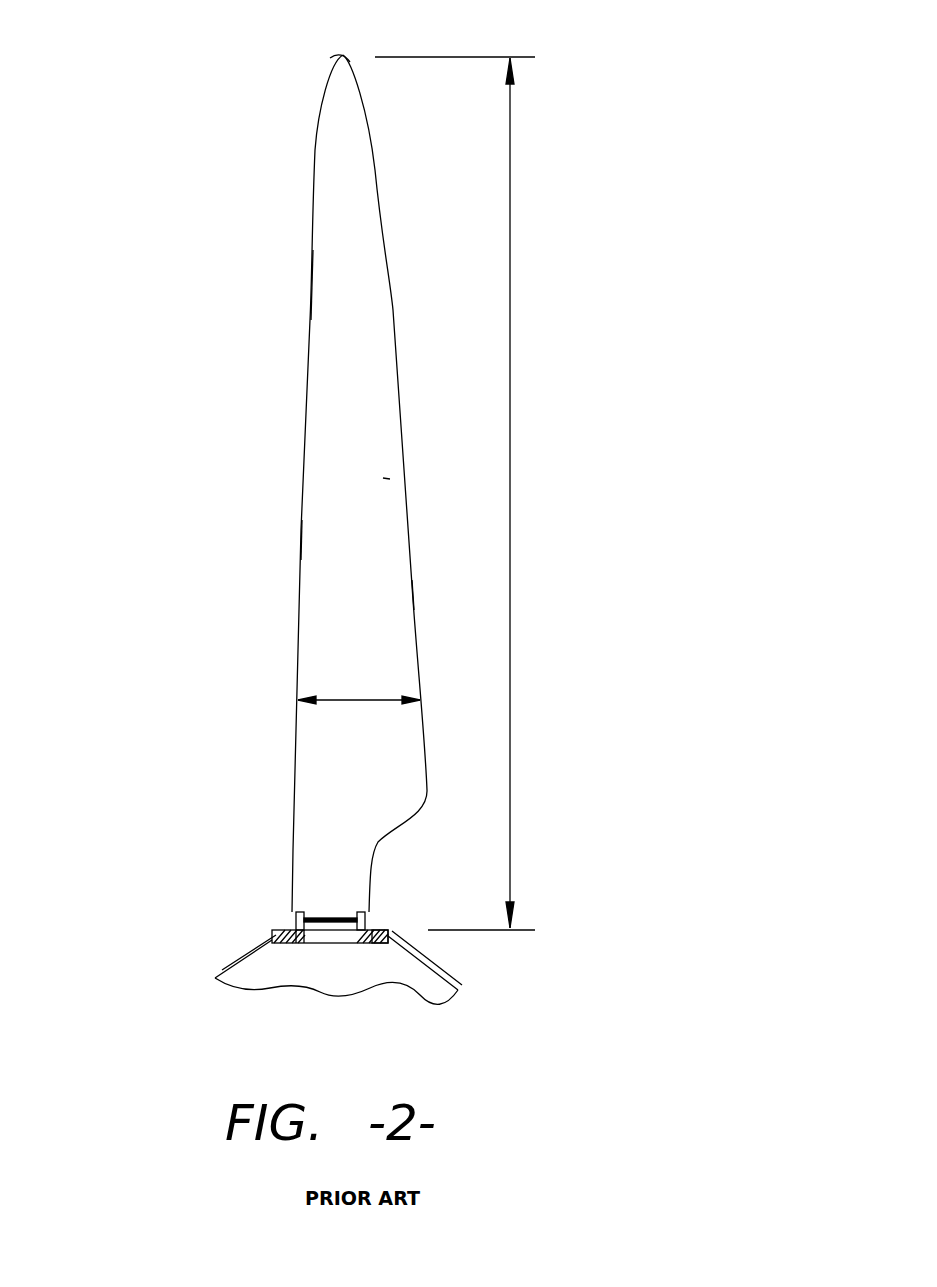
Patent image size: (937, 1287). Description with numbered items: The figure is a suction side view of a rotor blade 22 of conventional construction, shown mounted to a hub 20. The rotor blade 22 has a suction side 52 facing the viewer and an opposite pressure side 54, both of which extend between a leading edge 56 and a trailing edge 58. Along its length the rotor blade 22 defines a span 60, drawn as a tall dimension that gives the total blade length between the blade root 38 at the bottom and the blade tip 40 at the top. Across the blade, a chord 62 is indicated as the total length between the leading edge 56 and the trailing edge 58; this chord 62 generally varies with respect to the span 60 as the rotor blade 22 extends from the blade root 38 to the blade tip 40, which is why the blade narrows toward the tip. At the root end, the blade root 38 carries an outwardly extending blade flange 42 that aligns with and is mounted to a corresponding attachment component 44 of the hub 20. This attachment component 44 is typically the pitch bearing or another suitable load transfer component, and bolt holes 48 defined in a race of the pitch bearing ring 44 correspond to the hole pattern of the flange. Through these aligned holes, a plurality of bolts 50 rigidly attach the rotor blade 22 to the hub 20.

The hub 20 is at (450, 968).
The rotor blade 22 is at (188, 162).
The blade root 38 is at (335, 872).
The blade tip 40 is at (343, 55).
The blade flange 42 is at (325, 918).
The attachment component 44 is at (270, 945).
The bolt holes 48 is at (368, 932).
The bolts 50 is at (295, 945).
The suction side 52 is at (340, 405).
The pressure side 54 is at (383, 478).
The leading edge 56 is at (303, 540).
The trailing edge 58 is at (418, 595).
The span 60 is at (512, 432).
The chord 62 is at (350, 695).